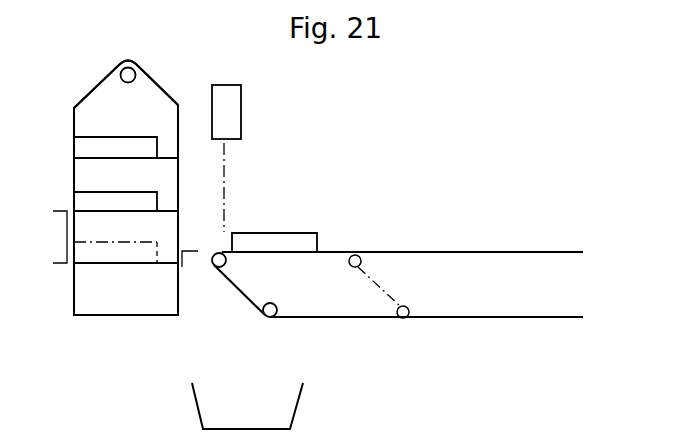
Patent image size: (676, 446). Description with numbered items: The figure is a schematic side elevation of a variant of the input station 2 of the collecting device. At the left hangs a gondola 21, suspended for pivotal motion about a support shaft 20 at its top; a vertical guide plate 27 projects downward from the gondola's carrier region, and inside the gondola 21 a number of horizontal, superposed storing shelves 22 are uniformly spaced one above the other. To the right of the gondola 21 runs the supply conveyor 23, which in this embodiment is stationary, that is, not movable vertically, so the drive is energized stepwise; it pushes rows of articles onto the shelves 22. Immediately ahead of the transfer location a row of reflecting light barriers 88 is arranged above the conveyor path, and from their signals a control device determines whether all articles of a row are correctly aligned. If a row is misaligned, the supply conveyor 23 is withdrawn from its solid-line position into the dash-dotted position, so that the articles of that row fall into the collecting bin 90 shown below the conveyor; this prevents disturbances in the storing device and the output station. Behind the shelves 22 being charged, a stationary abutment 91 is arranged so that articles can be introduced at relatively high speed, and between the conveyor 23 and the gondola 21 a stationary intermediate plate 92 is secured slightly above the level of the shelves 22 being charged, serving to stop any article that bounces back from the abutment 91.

The input station 2 is at (268, 170).
The support shaft 20 is at (122, 70).
The gondola 21 is at (168, 86).
The storing shelf 22 is at (93, 264).
The supply conveyor 23 is at (480, 250).
The guide plate 27 is at (95, 107).
The reflecting light barrier 88 is at (229, 105).
The collecting bin 90 is at (248, 408).
The stationary abutment 91 is at (67, 234).
The stationary intermediate plate 92 is at (190, 257).